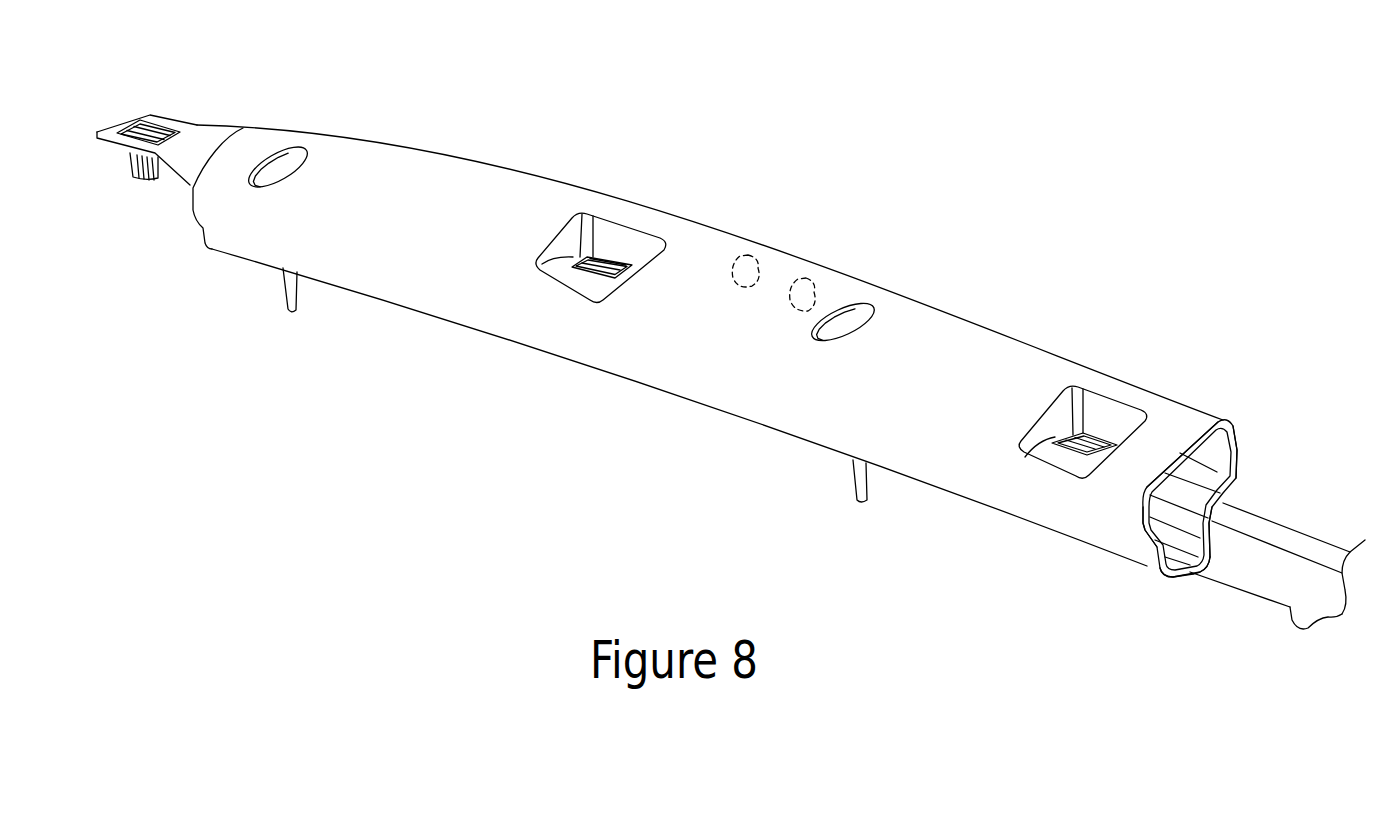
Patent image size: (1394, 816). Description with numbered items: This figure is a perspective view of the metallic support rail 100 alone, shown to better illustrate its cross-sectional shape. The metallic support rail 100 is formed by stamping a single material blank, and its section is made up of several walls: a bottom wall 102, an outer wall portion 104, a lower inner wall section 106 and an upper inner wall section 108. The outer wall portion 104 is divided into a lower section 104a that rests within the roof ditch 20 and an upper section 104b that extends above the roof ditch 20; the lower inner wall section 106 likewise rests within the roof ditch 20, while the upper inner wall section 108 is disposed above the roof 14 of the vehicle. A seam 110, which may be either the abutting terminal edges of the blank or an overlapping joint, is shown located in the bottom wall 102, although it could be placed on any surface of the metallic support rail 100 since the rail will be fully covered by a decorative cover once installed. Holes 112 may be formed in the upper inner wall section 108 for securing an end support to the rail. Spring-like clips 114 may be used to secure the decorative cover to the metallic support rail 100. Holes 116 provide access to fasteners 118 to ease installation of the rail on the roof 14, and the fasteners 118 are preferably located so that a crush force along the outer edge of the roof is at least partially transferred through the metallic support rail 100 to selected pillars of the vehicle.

The metallic support rail 100 is at (468, 138).
The holes 116 is at (288, 162).
The spring-like clips 114 is at (610, 262).
The holes 112 is at (758, 266).
The fasteners 118 is at (289, 298).
The outer wall portion 104 is at (1143, 520).
The lower section 104a is at (1125, 512).
The upper section 104b is at (1162, 447).
The upper inner wall section 108 is at (1231, 449).
The lower inner wall section 106 is at (1208, 540).
The bottom wall 102 is at (1178, 575).
The seam 110 is at (1193, 578).
The roof 14 is at (1333, 538).
The roof ditch 20 is at (1322, 620).